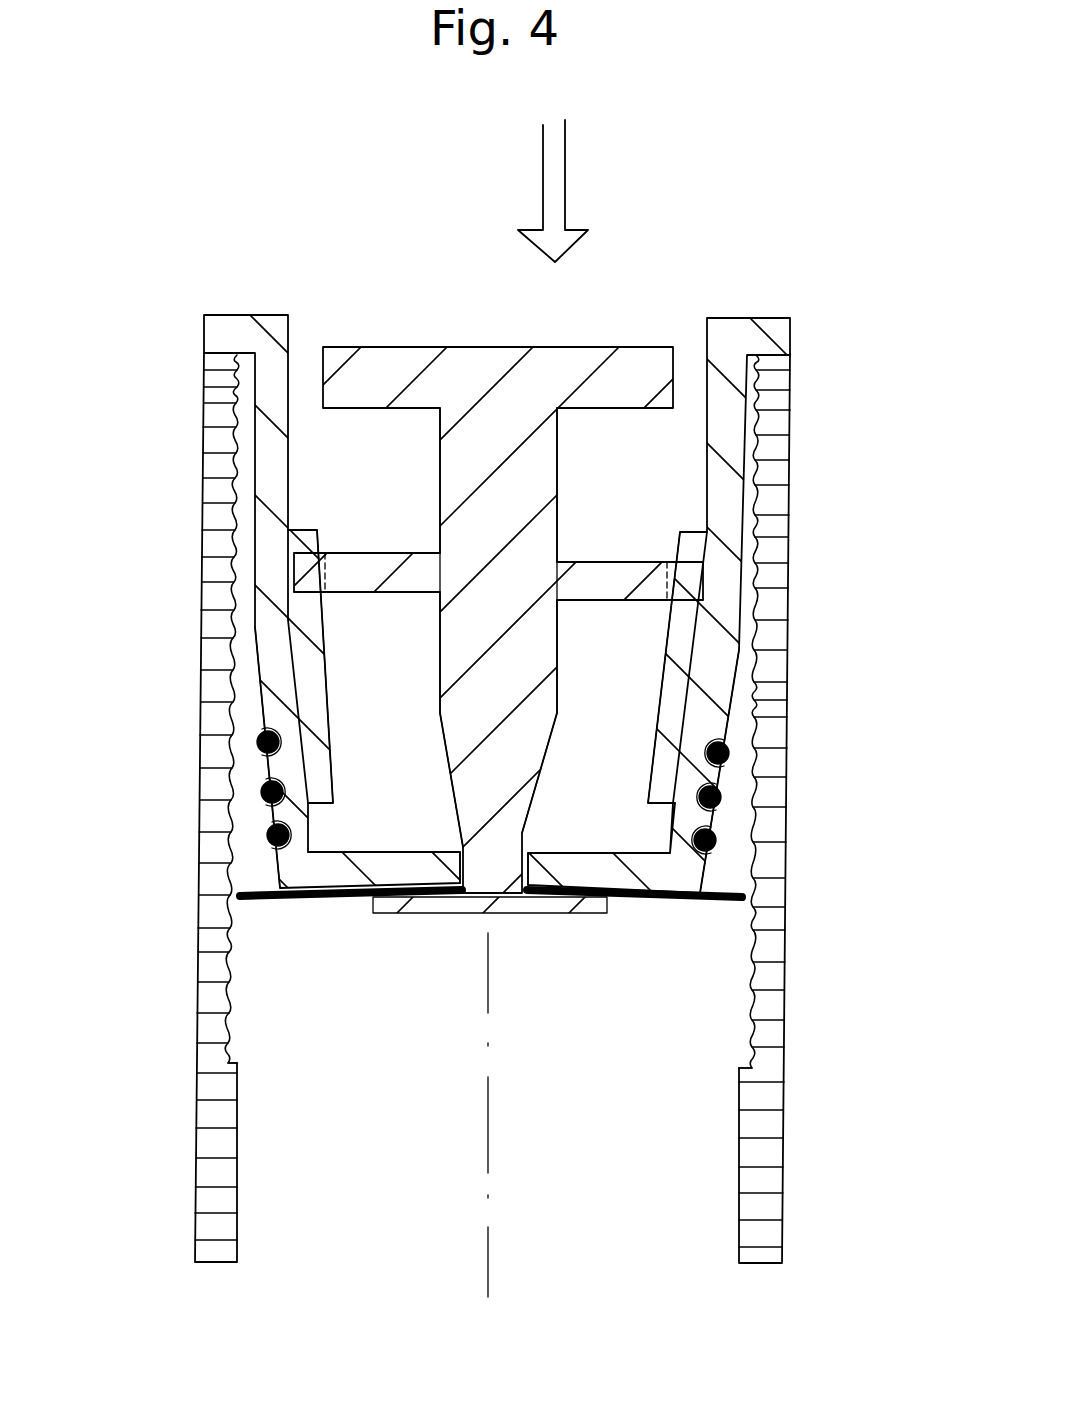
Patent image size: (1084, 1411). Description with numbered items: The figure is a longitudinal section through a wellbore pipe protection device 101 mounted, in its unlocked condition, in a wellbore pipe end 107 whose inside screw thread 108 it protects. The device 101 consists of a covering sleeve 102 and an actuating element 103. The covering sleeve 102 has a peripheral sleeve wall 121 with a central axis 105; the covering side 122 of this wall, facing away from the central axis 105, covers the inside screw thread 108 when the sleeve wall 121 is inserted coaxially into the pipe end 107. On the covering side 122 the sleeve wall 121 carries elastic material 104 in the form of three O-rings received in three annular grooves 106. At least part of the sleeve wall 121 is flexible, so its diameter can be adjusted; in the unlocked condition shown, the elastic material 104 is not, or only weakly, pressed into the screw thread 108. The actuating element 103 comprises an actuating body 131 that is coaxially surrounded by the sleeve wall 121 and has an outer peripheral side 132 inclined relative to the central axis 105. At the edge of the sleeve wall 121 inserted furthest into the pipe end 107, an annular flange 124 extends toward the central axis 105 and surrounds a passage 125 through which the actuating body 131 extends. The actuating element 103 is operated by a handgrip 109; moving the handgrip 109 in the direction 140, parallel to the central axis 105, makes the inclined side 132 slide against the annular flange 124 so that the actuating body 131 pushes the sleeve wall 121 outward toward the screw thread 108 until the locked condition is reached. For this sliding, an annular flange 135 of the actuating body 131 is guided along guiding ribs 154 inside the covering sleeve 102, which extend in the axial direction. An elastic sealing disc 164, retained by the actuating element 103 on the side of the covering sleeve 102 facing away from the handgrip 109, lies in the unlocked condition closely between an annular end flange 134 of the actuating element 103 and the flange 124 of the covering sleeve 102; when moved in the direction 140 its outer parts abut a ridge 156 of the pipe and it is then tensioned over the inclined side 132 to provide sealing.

The wellbore pipe protection device 101 is at (282, 129).
The covering sleeve 102 is at (271, 289).
The actuating element 103 is at (630, 286).
The elastic material 104 is at (258, 742).
The central axis 105 is at (490, 1265).
The annular grooves 106 is at (712, 742).
The wellbore pipe end 107 is at (259, 1226).
The inside screw thread 108 is at (228, 977).
The handgrip 109 is at (477, 367).
The sleeve wall 121 is at (272, 467).
The covering side 122 is at (258, 627).
The annular flange 124 is at (393, 860).
The passage 125 is at (535, 825).
The actuating body 131 is at (540, 638).
The outer peripheral side 132 is at (547, 745).
The end flange 134 is at (551, 905).
The flange 135 is at (610, 568).
The direction 140 is at (567, 150).
The guiding ribs 154 is at (312, 665).
The ridge 156 is at (240, 1065).
The elastic sealing disc 164 is at (265, 900).